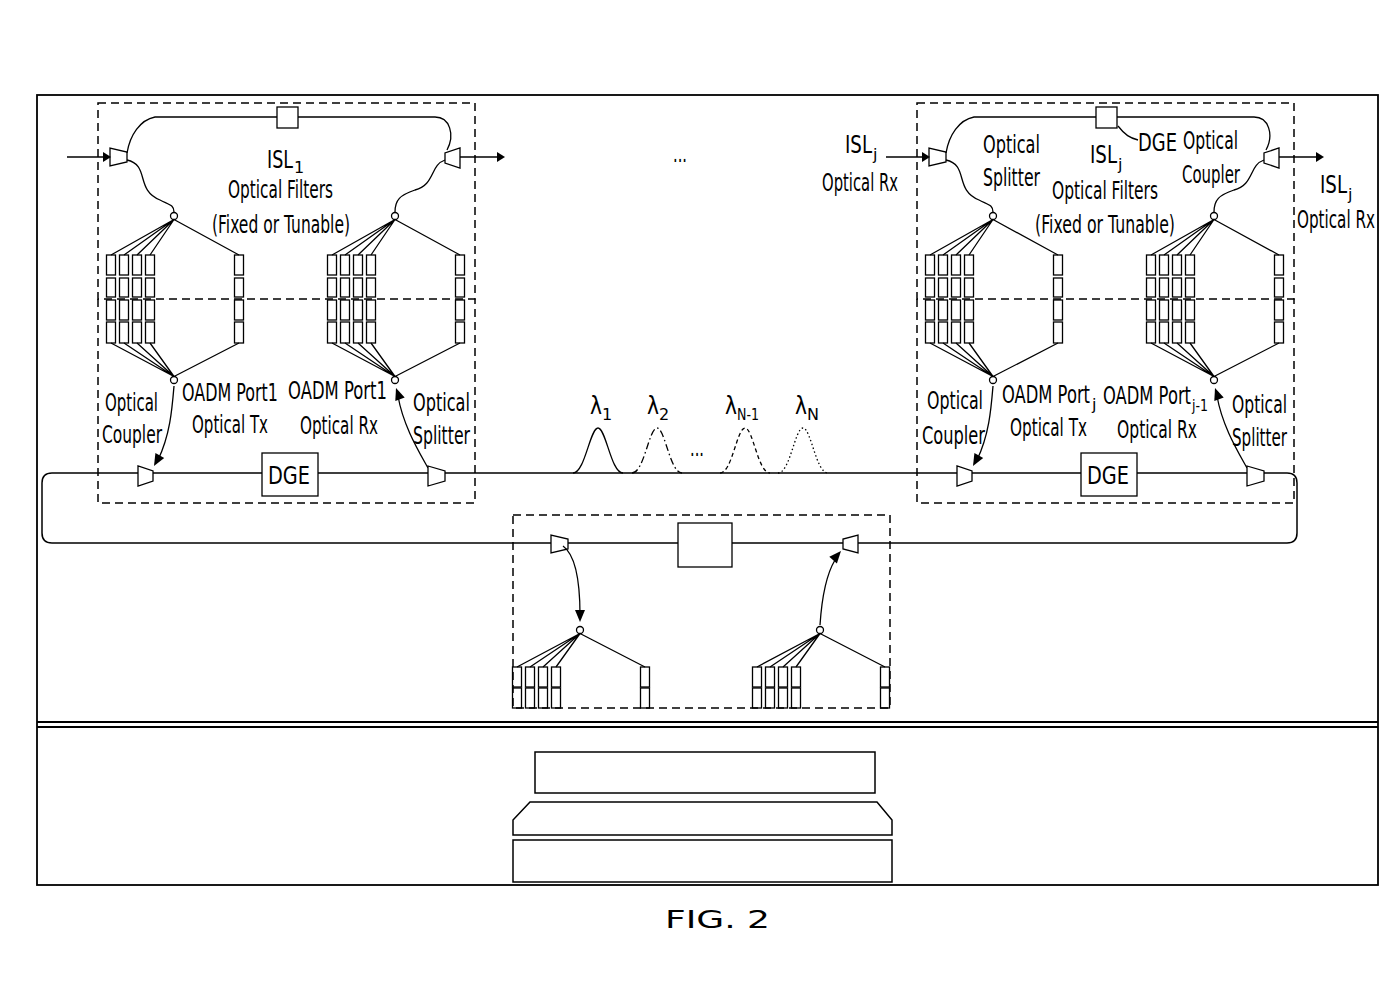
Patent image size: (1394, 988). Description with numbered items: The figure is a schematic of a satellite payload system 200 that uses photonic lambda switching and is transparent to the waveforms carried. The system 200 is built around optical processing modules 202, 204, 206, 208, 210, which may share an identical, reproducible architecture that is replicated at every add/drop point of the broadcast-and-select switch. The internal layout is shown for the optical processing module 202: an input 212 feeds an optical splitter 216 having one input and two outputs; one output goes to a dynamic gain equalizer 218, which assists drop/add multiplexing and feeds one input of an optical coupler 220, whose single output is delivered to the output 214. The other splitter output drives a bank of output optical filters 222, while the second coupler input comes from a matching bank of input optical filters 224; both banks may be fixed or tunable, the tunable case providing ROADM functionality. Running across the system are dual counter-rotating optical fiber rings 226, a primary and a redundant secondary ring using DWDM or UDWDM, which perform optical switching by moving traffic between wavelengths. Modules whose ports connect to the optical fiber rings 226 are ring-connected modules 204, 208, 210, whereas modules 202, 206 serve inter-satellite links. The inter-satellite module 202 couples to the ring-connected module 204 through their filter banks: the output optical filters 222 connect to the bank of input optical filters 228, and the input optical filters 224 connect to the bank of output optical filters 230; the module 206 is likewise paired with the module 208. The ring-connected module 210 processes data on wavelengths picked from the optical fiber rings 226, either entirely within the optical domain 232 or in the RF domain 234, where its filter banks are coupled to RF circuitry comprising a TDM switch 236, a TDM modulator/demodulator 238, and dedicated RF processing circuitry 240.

The satellite payload system 200 is at (72, 88).
The optical processing module 202 is at (479, 247).
The optical processing module 204 is at (479, 385).
The optical processing module 206 is at (912, 233).
The optical processing module 208 is at (914, 372).
The optical processing module 210 is at (512, 605).
The input 212 is at (72, 228).
The output 214 is at (480, 162).
The optical splitter 216 is at (117, 147).
The dynamic gain equalizer 218 is at (297, 128).
The optical coupler 220 is at (450, 168).
The bank of output optical filters 222 is at (106, 290).
The bank of input optical filters 224 is at (463, 283).
The dual counter-rotating optical fiber rings 226 is at (326, 545).
The bank of input optical filters 228 is at (106, 332).
The bank of output optical filters 230 is at (463, 328).
The optical domain 232 is at (332, 672).
The RF domain 234 is at (345, 820).
The TDM switch 236 is at (877, 775).
The TDM modulator/demodulator 238 is at (893, 822).
The dedicated RF processing circuitry 240 is at (893, 858).